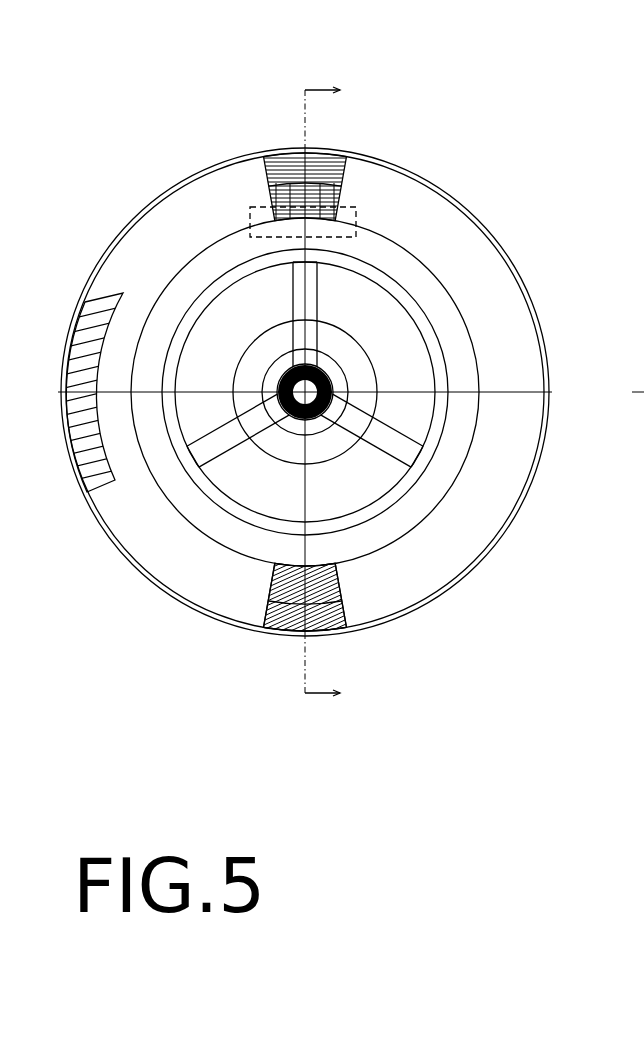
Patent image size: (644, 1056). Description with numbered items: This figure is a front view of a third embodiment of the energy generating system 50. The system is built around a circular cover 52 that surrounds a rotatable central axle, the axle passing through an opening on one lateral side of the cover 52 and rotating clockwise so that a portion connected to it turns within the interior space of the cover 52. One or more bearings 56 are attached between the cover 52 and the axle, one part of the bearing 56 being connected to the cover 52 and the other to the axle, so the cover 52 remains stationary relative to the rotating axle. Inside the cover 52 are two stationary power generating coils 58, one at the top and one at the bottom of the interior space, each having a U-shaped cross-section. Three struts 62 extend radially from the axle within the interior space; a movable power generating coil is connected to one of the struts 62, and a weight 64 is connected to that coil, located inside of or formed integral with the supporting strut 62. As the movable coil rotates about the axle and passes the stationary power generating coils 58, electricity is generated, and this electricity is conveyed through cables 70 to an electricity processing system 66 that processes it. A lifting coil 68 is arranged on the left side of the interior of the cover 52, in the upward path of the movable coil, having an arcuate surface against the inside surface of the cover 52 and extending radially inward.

The energy generating system 50 is at (337, 364).
The circular cover 52 is at (492, 232).
The bearing 56 is at (333, 385).
The stationary power generating coil 58 is at (272, 155).
The strut 62 is at (298, 293).
The weight 64 is at (357, 208).
The electricity processing system 66 is at (267, 625).
The lifting coil 68 is at (103, 310).
The cable 70 is at (227, 649).